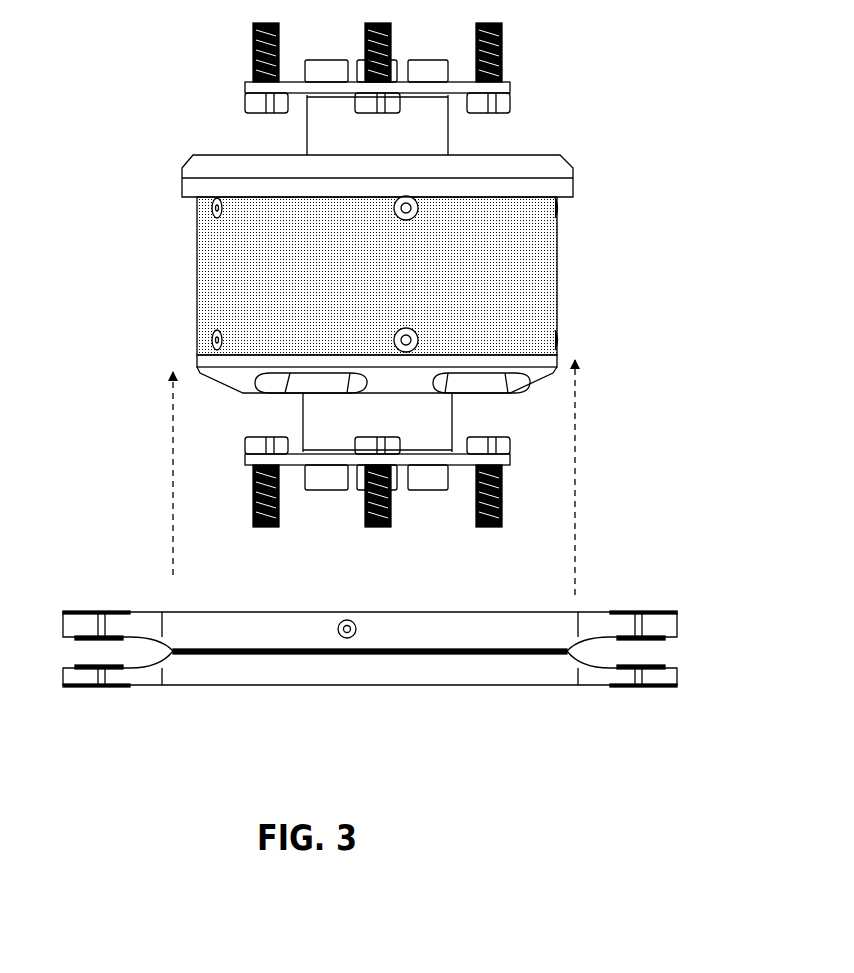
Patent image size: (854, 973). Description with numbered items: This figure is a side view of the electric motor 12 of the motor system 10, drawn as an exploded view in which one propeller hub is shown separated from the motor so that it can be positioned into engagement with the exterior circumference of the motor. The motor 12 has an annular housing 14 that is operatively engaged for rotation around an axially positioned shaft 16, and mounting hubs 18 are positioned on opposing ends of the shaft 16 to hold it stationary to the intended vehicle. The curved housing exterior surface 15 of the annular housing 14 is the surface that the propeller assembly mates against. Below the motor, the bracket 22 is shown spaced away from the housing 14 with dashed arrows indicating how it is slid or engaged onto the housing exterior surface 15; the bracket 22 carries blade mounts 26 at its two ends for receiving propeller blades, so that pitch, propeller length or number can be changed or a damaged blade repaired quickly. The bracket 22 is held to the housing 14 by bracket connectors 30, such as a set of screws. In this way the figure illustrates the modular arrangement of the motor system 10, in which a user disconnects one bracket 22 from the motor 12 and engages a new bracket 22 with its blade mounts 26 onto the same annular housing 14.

The motor system 10 is at (658, 227).
The electric motor 12 is at (573, 168).
The annular housing 14 is at (557, 297).
The housing exterior surface 15 is at (557, 261).
The axially positioned shaft 16 is at (327, 135).
The mounting hubs 18 is at (510, 88).
The bracket 22 is at (487, 677).
The blade mounts 26 is at (92, 616).
The bracket connectors 30 is at (337, 628).